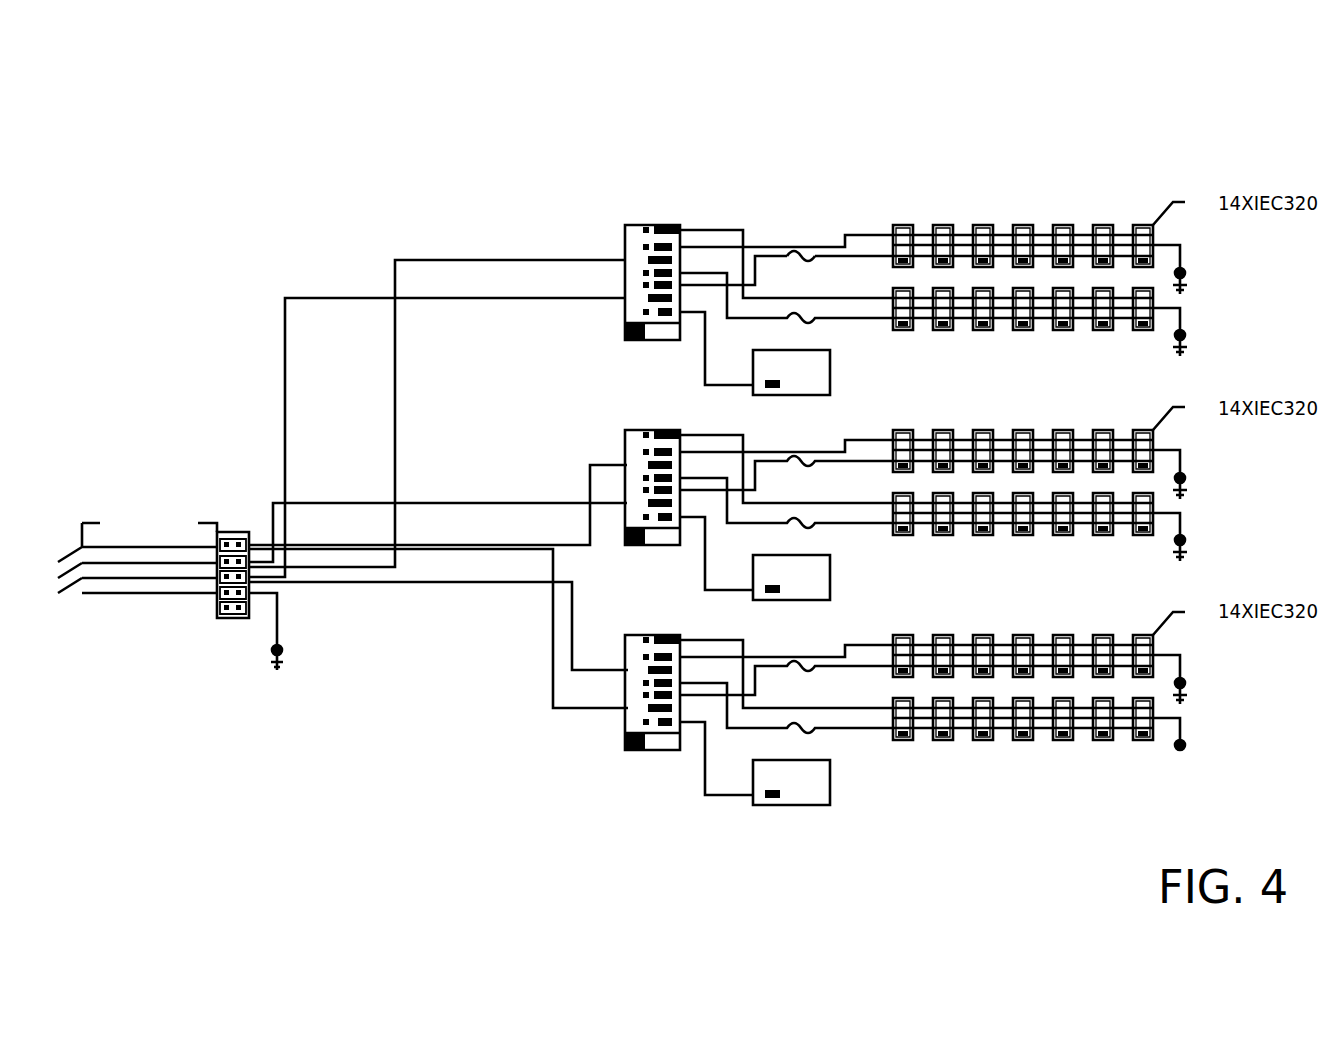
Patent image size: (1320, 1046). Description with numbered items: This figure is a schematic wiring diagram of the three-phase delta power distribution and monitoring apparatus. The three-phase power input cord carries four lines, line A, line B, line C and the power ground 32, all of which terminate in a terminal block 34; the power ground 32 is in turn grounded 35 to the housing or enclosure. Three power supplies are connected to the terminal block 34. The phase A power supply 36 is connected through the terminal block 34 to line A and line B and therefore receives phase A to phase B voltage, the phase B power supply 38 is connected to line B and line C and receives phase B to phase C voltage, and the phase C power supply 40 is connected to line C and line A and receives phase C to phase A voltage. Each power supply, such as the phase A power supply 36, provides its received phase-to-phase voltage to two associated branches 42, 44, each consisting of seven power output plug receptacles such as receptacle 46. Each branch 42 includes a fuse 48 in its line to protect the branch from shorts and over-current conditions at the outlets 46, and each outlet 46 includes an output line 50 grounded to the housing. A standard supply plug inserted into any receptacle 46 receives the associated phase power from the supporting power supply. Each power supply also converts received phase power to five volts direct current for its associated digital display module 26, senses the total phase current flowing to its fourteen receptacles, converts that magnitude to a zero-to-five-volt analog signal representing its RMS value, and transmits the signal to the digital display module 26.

The digital display module 26 is at (835, 370).
The power ground 32 is at (113, 593).
The terminal block 34 is at (232, 618).
The ground 35 is at (280, 627).
The phase A power supply 36 is at (625, 247).
The phase B power supply 38 is at (627, 455).
The phase C power supply 40 is at (662, 750).
The branch 42 is at (852, 212).
The branch 44 is at (1060, 330).
The power output plug receptacle 46 is at (1142, 225).
The fuse 48 is at (808, 258).
The output line 50 is at (1182, 248).